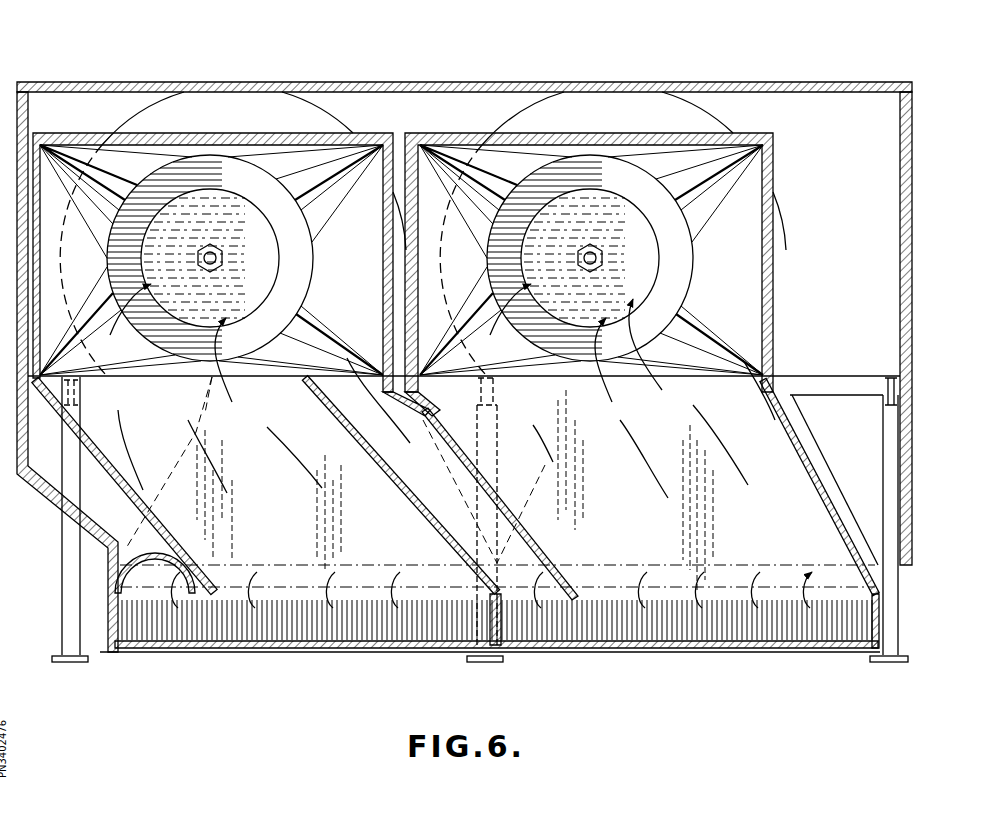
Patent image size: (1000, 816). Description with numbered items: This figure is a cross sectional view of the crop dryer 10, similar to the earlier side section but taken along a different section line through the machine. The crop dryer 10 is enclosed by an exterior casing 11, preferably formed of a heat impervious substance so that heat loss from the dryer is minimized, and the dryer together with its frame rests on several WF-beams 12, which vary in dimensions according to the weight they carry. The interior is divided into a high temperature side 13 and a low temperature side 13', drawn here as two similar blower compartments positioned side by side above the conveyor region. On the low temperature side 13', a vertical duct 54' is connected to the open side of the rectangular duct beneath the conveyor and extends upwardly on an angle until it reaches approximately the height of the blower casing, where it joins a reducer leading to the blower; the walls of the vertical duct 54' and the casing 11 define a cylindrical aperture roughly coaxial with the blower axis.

The crop dryer 10 is at (925, 108).
The exterior casing 11 is at (841, 86).
The WF-beams 12 is at (68, 539).
The high temperature side 13 is at (219, 227).
The low temperature side 13' is at (595, 227).
The vertical duct 54' is at (819, 513).